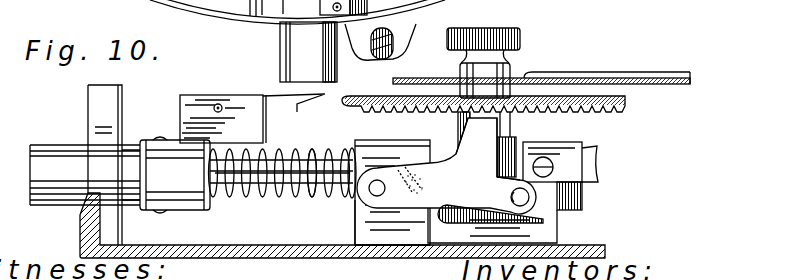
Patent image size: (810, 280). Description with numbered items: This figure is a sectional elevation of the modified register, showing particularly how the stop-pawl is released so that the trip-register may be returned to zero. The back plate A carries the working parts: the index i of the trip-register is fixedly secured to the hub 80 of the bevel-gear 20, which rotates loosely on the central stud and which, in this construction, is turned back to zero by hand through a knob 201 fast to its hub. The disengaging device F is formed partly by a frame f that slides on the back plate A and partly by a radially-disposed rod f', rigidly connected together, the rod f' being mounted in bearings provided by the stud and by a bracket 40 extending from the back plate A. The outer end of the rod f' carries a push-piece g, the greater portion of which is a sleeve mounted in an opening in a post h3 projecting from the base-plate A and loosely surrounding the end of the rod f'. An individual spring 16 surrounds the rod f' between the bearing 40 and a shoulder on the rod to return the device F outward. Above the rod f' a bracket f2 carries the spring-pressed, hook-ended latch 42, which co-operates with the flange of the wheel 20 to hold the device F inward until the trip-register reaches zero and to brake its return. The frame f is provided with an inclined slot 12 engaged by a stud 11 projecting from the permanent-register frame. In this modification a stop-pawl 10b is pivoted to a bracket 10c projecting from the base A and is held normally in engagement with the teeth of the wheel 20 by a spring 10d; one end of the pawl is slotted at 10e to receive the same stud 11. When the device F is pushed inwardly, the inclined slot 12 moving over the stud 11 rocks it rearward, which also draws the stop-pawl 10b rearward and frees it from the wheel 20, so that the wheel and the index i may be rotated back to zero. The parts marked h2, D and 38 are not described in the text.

The support arm h2 is at (276, 8).
The push-piece g is at (183, 113).
The knob 201 is at (520, 36).
The hub 80 is at (465, 88).
The index i is at (676, 95).
The frame plate D is at (690, 92).
The bevel-gear 20 is at (622, 104).
The post 38 is at (513, 124).
The post h3 is at (105, 165).
The back plate A is at (342, 225).
The disengaging device F is at (283, 164).
The spring 16 is at (318, 156).
The rod f' is at (282, 197).
The bracket f2 is at (223, 119).
The latch 42 is at (294, 113).
The bracket 40 is at (390, 141).
The bracket 10c is at (392, 222).
The spring 10d is at (420, 178).
The stop-pawl 10b is at (476, 147).
The slot 10e is at (496, 181).
The stud 11 is at (511, 198).
The inclined slot 12 is at (442, 223).
The frame f is at (492, 223).